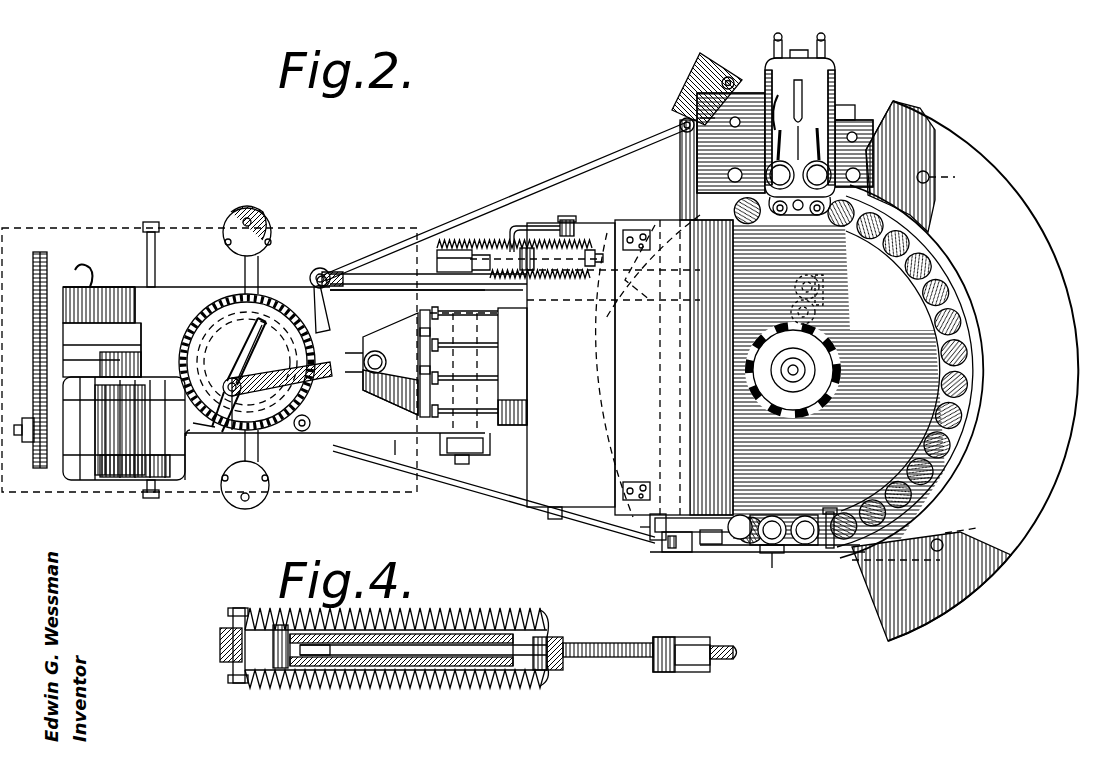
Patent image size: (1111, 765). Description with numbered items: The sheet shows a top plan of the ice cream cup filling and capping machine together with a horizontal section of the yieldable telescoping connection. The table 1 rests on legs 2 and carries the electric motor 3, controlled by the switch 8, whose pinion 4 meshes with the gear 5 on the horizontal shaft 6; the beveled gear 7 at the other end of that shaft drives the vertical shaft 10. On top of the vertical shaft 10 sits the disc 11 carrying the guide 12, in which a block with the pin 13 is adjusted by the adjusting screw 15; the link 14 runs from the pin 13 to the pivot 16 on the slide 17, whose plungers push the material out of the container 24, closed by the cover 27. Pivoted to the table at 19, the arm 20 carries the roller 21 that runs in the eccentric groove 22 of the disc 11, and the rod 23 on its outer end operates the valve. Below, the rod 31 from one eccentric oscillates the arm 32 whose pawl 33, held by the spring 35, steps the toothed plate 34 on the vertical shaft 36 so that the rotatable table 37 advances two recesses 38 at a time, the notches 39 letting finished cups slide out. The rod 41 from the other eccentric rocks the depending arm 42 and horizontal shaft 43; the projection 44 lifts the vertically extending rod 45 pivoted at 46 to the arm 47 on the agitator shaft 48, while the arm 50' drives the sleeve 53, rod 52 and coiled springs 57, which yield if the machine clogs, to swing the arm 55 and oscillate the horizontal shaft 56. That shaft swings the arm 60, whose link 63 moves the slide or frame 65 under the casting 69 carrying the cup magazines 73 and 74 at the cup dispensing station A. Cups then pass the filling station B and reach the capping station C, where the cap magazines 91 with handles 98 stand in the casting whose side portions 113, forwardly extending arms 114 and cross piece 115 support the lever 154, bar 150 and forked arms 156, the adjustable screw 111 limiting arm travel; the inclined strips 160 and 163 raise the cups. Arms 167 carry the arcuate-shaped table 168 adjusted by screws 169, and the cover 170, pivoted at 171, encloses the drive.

In FIG. 2, the table 1 is at (382, 440).
In FIG. 2, the legs 2 is at (268, 265).
In FIG. 2, the electric motor 3 is at (115, 490).
In FIG. 2, the pinion 4 is at (25, 452).
In FIG. 2, the gear 5 is at (33, 335).
In FIG. 2, the horizontal shaft 6 is at (117, 320).
In FIG. 2, the beveled gear 7 is at (142, 341).
In FIG. 2, the switch 8 is at (118, 300).
In FIG. 2, the vertical shaft 10 is at (492, 410).
In FIG. 2, the disc 11 is at (205, 308).
In FIG. 2, the guide 12 is at (196, 480).
In FIG. 2, the pin 13 is at (205, 392).
In FIG. 2, the link 14 is at (360, 395).
In FIG. 2, the adjusting screw 15 is at (216, 412).
In FIG. 2, the pivotal connection 16 is at (376, 350).
In FIG. 2, the slide 17 is at (390, 396).
In FIG. 2, the pivot 19 is at (330, 448).
In FIG. 2, the arm 20 is at (388, 356).
In FIG. 2, the roller 21 is at (305, 277).
In FIG. 2, the eccentric groove 22 is at (298, 432).
In FIG. 2, the rod 23 is at (386, 274).
In FIG. 2, the container 24 is at (588, 493).
In FIG. 2, the cover 27 is at (670, 457).
In FIG. 2, the rod 31 is at (553, 312).
In FIG. 2, the arm 32 is at (810, 278).
In FIG. 2, the pawl 33 is at (818, 320).
In FIG. 2, the toothed plate 34 is at (835, 353).
In FIG. 2, the spring 35 is at (825, 298).
In FIG. 2, the vertical shaft 36 is at (740, 440).
In FIG. 2, the rotatable table 37 is at (919, 386).
In FIG. 2, the recesses 38 is at (965, 432).
In FIG. 2, the notches 39 is at (978, 385).
In FIG. 2, the rod 41 is at (408, 448).
In FIG. 2, the depending arm 42 is at (452, 442).
In FIG. 2, the horizontal shaft 43 is at (463, 466).
In FIG. 2, the arm or projection 44 is at (455, 250).
In FIG. 2, the vertically extending rod 45 is at (554, 270).
In FIG. 2, the pivotal connection 46 is at (498, 248).
In FIG. 2, the arm 47 is at (532, 226).
In FIG. 2, the shaft 48 is at (570, 220).
In FIG. 4, the arm 50' is at (366, 645).
In FIG. 2, the rod 52 is at (603, 262).
In FIG. 4, the rod 52 is at (597, 643).
In FIG. 2, the sleeve 53 is at (556, 250).
In FIG. 4, the sleeve 53 is at (366, 666).
In FIG. 2, the arm 55 is at (655, 224).
In FIG. 4, the arm 55 is at (701, 662).
In FIG. 2, the horizontal shaft 56 is at (680, 176).
In FIG. 2, the coiled springs 57 is at (576, 292).
In FIG. 4, the coiled springs 57 is at (455, 618).
In FIG. 2, the arm 60 is at (668, 540).
In FIG. 2, the link 63 is at (683, 552).
In FIG. 2, the slide or frame 65 is at (718, 550).
In FIG. 2, the casting 69 is at (822, 518).
In FIG. 2, the tube or magazine 73 is at (786, 556).
In FIG. 2, the tube or magazine 74 is at (818, 548).
In FIG. 2, the tubes or magazines 91 is at (762, 170).
In FIG. 2, the handle 98 is at (788, 102).
In FIG. 2, the adjustable screw 111 is at (797, 60).
In FIG. 2, the upwardly extending side portions 113 is at (870, 165).
In FIG. 2, the forwardly extending arms 114 is at (803, 222).
In FIG. 2, the cross piece 115 is at (808, 218).
In FIG. 2, the bar 150 is at (808, 122).
In FIG. 2, the lever 154 is at (818, 128).
In FIG. 2, the arms 156 is at (746, 205).
In FIG. 2, the inclined plate or strip 160 is at (742, 280).
In FIG. 2, the inclined plate or strip 163 is at (955, 298).
In FIG. 2, the arms 167 is at (870, 160).
In FIG. 2, the arcuate-shaped table 168 is at (1038, 250).
In FIG. 2, the screws 169 is at (945, 534).
In FIG. 2, the cover 170 is at (78, 226).
In FIG. 2, the pivotal connection 171 is at (152, 222).
In FIG. 2, the cup dispensing station A is at (770, 556).
In FIG. 2, the filling station B is at (600, 423).
In FIG. 2, the capping station C is at (826, 76).